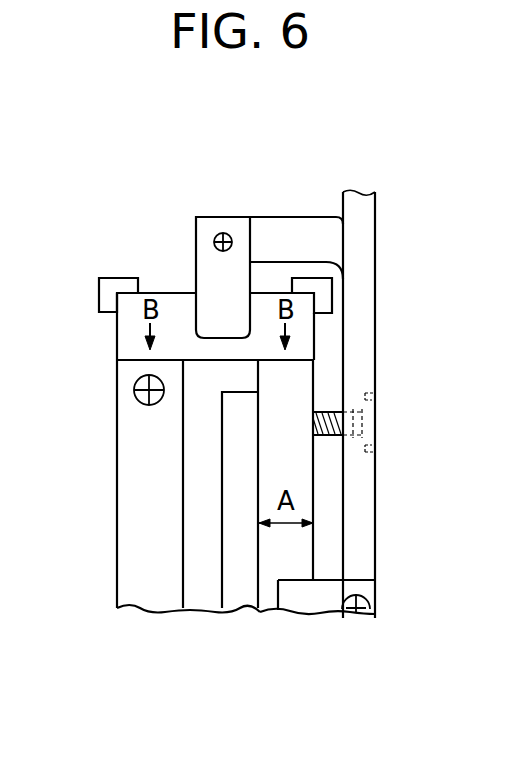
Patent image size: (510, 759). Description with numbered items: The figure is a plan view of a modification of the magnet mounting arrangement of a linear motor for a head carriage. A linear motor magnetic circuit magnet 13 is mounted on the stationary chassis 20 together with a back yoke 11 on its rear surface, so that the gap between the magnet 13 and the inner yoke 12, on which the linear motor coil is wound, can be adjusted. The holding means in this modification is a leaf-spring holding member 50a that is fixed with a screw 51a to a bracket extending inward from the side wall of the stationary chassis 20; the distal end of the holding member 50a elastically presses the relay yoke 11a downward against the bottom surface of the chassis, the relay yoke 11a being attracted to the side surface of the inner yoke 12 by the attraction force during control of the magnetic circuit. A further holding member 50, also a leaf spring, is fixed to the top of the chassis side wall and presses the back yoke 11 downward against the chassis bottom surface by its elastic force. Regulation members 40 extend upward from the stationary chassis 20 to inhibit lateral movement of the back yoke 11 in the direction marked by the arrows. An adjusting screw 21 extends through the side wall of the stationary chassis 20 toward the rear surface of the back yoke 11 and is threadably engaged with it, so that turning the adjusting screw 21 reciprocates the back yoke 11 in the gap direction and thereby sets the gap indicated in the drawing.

The stationary chassis 20 is at (368, 253).
The screw 51a is at (219, 235).
The holding member 50a is at (238, 228).
The regulation member 40 is at (114, 285).
The relay yoke 11a is at (118, 334).
The back yoke 11 is at (300, 379).
The inner yoke 12 is at (131, 511).
The linear motor magnetic circuit magnet 13 is at (238, 592).
The adjusting screw 21 is at (325, 436).
The holding member 50 is at (355, 586).